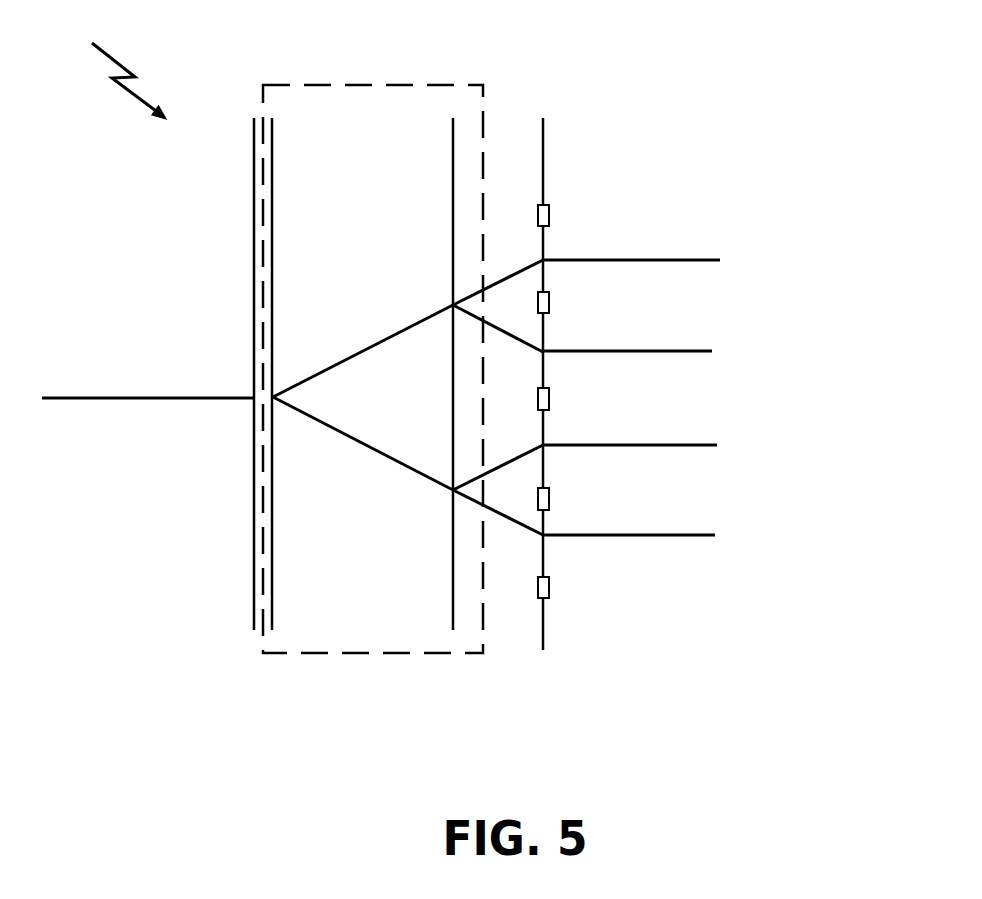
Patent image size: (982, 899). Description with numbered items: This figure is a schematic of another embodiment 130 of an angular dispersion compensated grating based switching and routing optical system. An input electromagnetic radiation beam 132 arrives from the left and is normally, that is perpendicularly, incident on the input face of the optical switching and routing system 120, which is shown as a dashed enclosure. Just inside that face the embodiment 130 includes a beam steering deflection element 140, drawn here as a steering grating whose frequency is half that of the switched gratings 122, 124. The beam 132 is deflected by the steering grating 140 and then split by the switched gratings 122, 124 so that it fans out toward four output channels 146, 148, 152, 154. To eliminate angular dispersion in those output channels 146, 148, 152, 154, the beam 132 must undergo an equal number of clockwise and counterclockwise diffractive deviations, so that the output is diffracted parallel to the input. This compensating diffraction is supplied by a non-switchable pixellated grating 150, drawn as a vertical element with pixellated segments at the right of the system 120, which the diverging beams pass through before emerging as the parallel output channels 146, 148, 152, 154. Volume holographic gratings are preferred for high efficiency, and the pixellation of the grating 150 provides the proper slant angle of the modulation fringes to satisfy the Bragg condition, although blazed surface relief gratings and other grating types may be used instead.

The angular dispersion compensated system embodiment 130 is at (115, 67).
The optical switching and routing system 120 is at (343, 655).
The switched grating 122 is at (273, 177).
The switched grating 124 is at (452, 225).
The input electromagnetic radiation beam 132 is at (98, 397).
The beam steering deflection element 140 is at (252, 508).
The output channel 146 is at (640, 258).
The output channel 148 is at (633, 350).
The non-switchable pixellated grating 150 is at (544, 625).
The output channel 152 is at (635, 443).
The output channel 154 is at (635, 533).